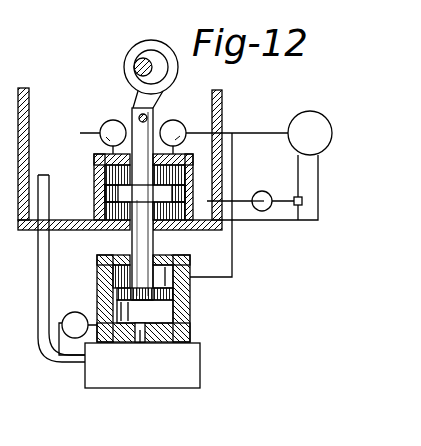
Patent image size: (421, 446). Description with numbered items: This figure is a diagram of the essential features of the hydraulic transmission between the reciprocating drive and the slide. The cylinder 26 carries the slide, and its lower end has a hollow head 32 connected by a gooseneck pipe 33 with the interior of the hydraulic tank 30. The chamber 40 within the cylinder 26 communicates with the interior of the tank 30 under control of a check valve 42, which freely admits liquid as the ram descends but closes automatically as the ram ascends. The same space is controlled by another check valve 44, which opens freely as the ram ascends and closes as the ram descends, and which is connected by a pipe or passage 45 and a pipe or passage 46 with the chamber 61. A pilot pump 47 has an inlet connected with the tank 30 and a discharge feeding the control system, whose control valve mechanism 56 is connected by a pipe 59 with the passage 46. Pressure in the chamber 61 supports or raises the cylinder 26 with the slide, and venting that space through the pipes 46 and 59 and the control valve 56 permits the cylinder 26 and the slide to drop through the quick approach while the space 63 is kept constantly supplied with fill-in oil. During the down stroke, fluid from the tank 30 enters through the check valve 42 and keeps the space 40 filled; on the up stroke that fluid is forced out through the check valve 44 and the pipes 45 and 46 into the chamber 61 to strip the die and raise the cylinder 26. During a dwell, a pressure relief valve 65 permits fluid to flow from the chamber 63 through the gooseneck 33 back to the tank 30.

The hydraulic tank 30 is at (29, 107).
The chamber 40 is at (110, 176).
The check valve 42 is at (115, 120).
The check valve 44 is at (168, 120).
The pipe or passage 45 is at (207, 135).
The pipe 59 is at (282, 133).
The control valve mechanism 56 is at (315, 118).
The pilot pump 47 is at (272, 197).
The pipe or passage 46 is at (232, 250).
The cylinder 26 is at (190, 303).
The chamber 61 is at (112, 274).
The space 63 is at (172, 324).
The pressure relief valve 65 is at (80, 296).
The gooseneck pipe 33 is at (38, 298).
The hollow head 32 is at (85, 380).